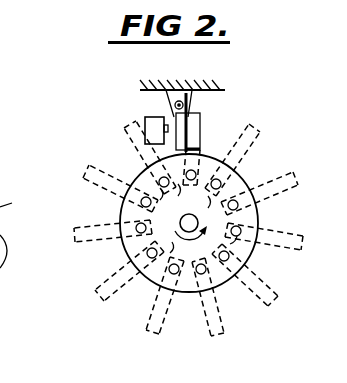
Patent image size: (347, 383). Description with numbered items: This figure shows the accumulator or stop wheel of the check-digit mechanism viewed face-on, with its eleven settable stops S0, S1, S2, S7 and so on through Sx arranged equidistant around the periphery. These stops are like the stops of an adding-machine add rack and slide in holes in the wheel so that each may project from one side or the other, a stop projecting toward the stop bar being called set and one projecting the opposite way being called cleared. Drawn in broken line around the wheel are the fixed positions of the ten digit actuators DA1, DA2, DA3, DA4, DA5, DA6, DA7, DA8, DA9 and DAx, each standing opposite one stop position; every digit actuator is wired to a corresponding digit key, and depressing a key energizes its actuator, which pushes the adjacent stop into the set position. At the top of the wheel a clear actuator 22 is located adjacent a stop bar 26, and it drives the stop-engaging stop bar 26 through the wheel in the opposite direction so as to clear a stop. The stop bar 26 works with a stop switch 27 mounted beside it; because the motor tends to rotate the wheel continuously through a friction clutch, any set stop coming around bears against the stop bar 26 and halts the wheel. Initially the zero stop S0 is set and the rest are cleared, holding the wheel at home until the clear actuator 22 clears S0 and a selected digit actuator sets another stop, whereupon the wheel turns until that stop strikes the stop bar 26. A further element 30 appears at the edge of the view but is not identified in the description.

The clear actuator 22 is at (218, 91).
The stop bar 26 is at (240, 96).
The stop switch 27 is at (150, 117).
The adjacent element 30 is at (11, 225).
The digit actuator DA1 is at (240, 130).
The digit actuator DA2 is at (275, 185).
The digit actuator DA3 is at (294, 236).
The digit actuator DA4 is at (272, 315).
The digit actuator DA5 is at (228, 320).
The digit actuator DA6 is at (160, 320).
The digit actuator DA7 is at (96, 292).
The digit actuator DA8 is at (108, 222).
The digit actuator DA9 is at (92, 165).
The digit actuator DAx is at (127, 130).
The zero stop S0 is at (186, 193).
The stop S1 is at (210, 201).
The stop S2 is at (223, 228).
The stop S7 is at (170, 251).
The stop Sx is at (163, 199).